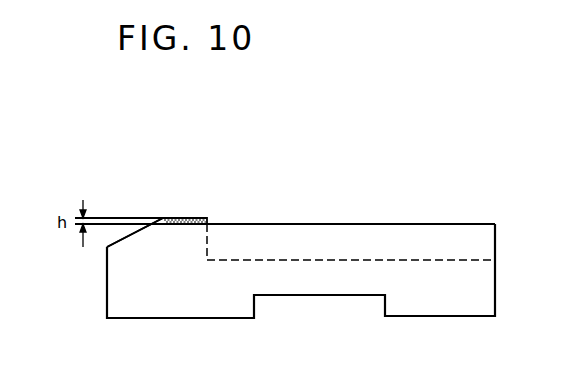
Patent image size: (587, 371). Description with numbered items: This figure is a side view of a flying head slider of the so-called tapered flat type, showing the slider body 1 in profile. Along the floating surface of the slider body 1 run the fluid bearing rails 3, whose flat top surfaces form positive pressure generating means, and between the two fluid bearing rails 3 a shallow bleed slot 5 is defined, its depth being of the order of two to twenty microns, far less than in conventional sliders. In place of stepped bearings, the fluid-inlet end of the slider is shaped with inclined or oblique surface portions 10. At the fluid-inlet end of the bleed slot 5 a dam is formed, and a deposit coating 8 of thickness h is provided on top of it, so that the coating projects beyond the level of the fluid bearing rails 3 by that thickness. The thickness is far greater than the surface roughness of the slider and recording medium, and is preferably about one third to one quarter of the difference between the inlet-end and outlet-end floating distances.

The slider body 1 is at (402, 303).
The fluid bearing rails 3 is at (348, 224).
The bleed slot 5 is at (429, 236).
The deposit coating 8 is at (182, 218).
The inclined surface portions 10 is at (123, 238).